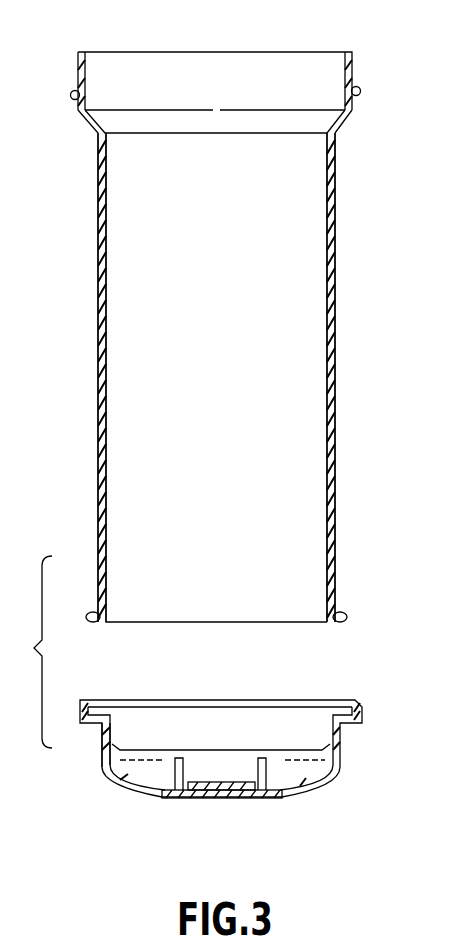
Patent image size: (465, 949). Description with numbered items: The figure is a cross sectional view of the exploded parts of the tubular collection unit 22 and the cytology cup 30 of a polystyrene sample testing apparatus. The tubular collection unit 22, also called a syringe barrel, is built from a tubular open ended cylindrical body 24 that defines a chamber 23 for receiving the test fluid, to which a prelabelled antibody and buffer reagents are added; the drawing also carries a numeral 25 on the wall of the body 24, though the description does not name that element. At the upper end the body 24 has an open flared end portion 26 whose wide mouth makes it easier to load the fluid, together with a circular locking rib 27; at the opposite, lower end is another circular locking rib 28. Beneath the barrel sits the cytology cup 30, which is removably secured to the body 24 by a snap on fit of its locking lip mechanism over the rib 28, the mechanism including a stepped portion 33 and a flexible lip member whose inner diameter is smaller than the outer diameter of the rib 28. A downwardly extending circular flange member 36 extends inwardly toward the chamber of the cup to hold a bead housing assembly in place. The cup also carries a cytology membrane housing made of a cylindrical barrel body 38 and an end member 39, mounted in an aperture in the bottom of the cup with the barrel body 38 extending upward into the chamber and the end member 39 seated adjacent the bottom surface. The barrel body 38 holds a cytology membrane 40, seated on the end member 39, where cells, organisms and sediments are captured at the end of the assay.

The tubular collection unit 22 is at (98, 288).
The chamber 23 is at (238, 467).
The cylindrical body 24 is at (334, 338).
The inner wall surface 25 is at (106, 385).
The flared end portion 26 is at (352, 72).
The circular locking rib 27 is at (359, 94).
The circular locking rib 28 is at (341, 628).
The cytology cup 30 is at (340, 768).
The stepped portion 33 is at (218, 752).
The circular flange member 36 is at (102, 773).
The cylindrical barrel body 38 is at (270, 758).
The end member 39 is at (163, 797).
The cytology membrane 40 is at (192, 782).